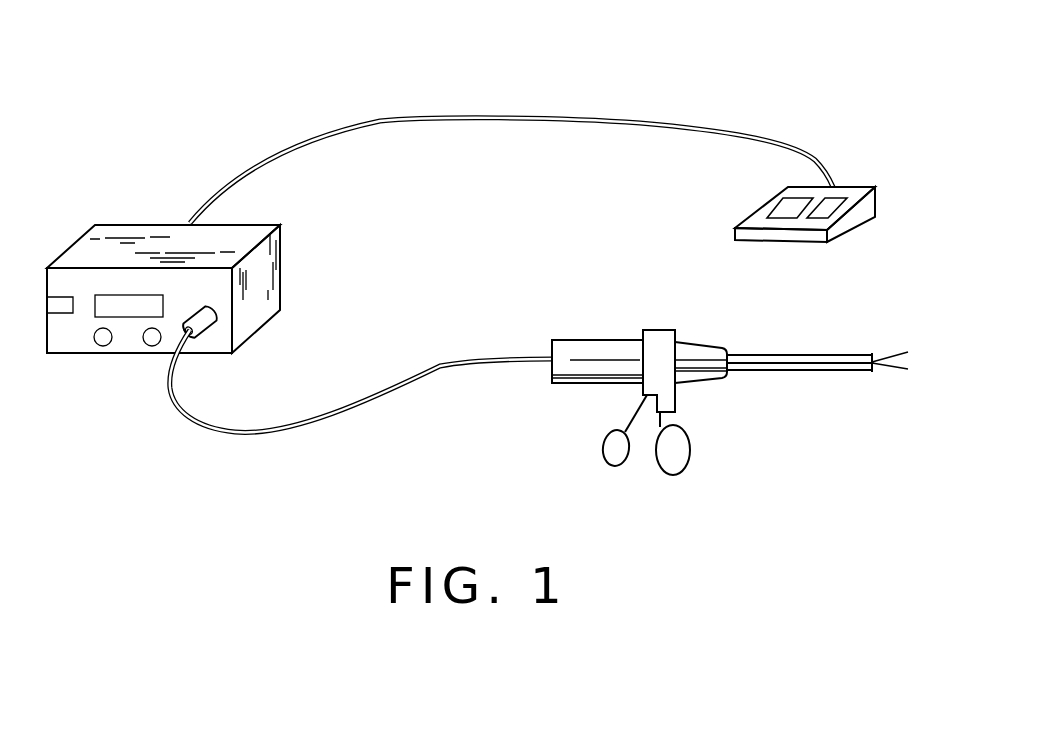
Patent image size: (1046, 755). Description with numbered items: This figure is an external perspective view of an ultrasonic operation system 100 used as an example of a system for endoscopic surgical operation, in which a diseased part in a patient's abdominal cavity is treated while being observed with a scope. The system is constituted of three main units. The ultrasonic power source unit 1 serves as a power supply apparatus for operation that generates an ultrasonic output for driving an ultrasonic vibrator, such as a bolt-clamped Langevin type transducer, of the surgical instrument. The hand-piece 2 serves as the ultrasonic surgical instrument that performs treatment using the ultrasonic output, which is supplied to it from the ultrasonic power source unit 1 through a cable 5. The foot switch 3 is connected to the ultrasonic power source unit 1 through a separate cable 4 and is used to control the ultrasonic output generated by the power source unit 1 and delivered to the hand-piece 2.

The treatment system 100 is at (410, 49).
The ultrasonic power source unit 1 is at (110, 232).
The hand-piece 2 is at (622, 327).
The foot switch 3 is at (845, 186).
The cable 4 is at (472, 117).
The cable 5 is at (367, 395).